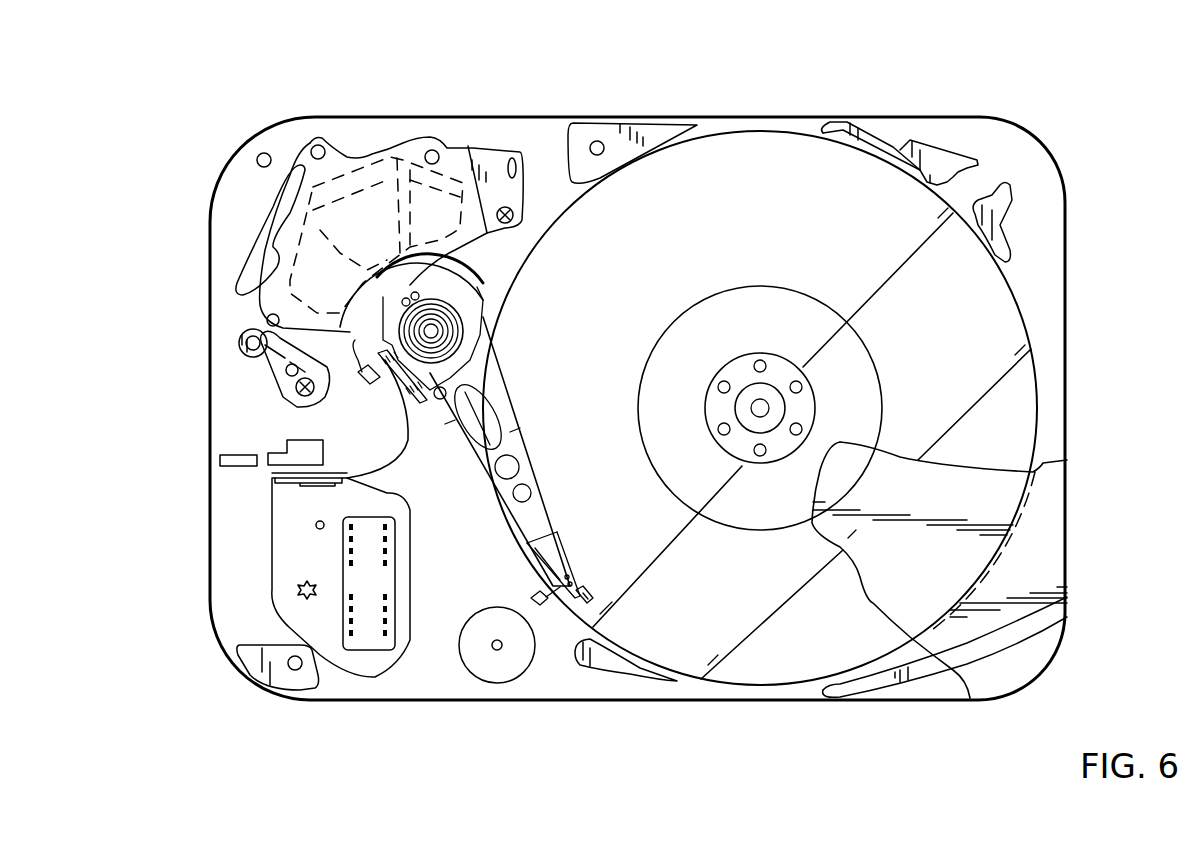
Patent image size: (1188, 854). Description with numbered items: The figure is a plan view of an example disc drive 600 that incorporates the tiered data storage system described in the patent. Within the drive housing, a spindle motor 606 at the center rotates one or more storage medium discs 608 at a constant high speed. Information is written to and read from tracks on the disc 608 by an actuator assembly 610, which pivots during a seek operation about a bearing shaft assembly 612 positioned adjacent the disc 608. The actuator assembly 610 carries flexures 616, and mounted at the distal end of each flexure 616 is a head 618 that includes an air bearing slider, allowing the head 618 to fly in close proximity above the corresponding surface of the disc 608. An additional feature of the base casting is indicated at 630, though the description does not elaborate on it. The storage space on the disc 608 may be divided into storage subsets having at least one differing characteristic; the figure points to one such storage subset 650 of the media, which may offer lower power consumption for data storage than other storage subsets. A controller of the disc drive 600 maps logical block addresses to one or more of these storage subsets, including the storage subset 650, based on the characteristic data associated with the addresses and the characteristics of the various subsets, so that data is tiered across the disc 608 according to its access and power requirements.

The disc drive 600 is at (199, 85).
The spindle motor 606 is at (760, 408).
The storage medium disc 608 is at (738, 182).
The actuator assembly 610 is at (518, 412).
The bearing shaft assembly 612 is at (431, 331).
The flexure 616 is at (570, 558).
The head 618 is at (590, 597).
The base deck pocket 630 is at (412, 462).
The storage subset 650 is at (752, 505).